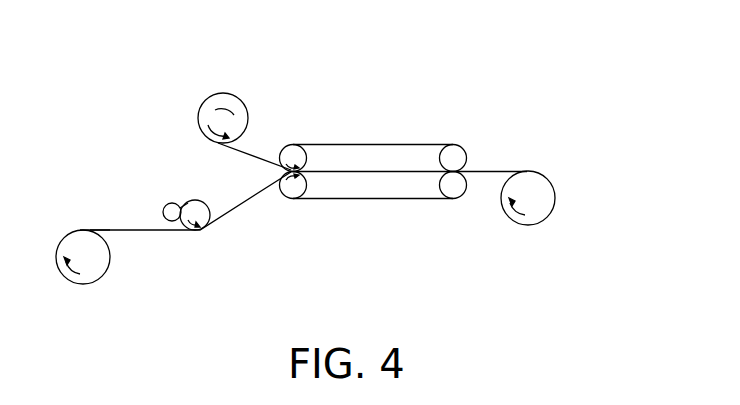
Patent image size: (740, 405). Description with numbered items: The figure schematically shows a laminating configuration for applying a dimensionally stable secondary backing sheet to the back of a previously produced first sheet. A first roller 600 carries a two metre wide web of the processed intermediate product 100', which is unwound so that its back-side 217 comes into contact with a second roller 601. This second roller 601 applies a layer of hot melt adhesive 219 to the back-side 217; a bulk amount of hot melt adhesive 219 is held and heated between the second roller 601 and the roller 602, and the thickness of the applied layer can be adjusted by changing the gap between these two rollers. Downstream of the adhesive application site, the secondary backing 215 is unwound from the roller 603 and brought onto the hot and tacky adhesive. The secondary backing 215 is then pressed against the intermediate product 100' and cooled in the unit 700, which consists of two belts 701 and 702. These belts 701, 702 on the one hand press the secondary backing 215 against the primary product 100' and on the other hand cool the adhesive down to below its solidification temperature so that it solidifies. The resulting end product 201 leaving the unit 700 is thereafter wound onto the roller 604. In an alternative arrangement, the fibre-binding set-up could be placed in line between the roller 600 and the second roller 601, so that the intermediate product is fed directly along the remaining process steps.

The unit 700 is at (390, 141).
The belt 701 is at (413, 144).
The belt 702 is at (365, 198).
The first roller 600 is at (107, 267).
The second roller 601 is at (200, 204).
The roller 602 is at (163, 206).
The roller 603 is at (237, 103).
The roller 604 is at (543, 210).
The processed intermediate product 100' is at (185, 225).
The secondary backing 215 is at (258, 158).
The end product 201 is at (487, 158).
The back-side 217 is at (100, 217).
The hot melt adhesive 219 is at (183, 188).